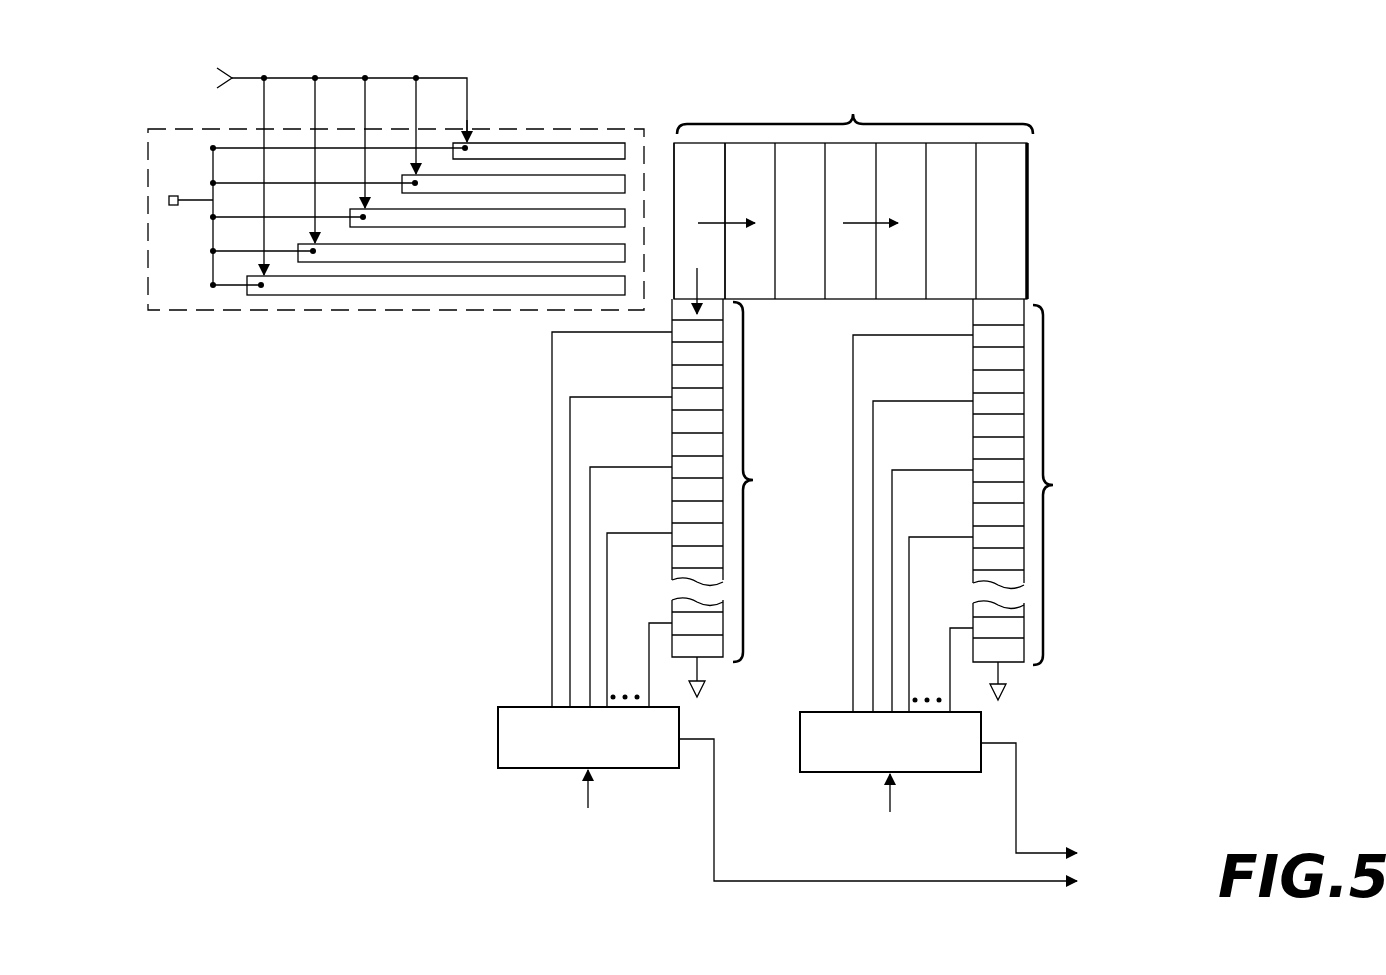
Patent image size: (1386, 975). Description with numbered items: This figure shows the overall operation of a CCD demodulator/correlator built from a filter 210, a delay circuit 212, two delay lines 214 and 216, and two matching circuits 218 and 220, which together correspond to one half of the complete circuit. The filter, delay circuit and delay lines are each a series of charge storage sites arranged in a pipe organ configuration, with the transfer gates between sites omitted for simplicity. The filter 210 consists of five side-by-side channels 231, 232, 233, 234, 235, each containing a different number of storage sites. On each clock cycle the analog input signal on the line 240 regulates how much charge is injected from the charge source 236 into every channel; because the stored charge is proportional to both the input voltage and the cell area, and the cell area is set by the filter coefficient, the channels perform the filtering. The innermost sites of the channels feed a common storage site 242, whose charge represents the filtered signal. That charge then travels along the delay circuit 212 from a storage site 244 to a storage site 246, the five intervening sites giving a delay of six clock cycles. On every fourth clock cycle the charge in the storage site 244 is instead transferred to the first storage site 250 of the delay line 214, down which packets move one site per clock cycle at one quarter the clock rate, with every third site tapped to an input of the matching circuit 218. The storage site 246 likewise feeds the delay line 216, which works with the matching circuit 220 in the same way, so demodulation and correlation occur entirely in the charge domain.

The filter 210 is at (145, 199).
The delay circuit 212 is at (878, 191).
The delay line 214 is at (679, 488).
The delay line 216 is at (978, 505).
The matching circuit 218 is at (507, 770).
The matching circuit 220 is at (809, 774).
The channel 231 is at (568, 128).
The channel 232 is at (494, 160).
The channel 233 is at (490, 230).
The channel 234 is at (376, 264).
The channel 235 is at (293, 298).
The charge source 236 is at (174, 195).
The input signal line 240 is at (243, 76).
The common storage site 242 is at (661, 143).
The storage site 244 is at (698, 143).
The storage site 246 is at (1017, 190).
The first storage site 250 is at (716, 312).